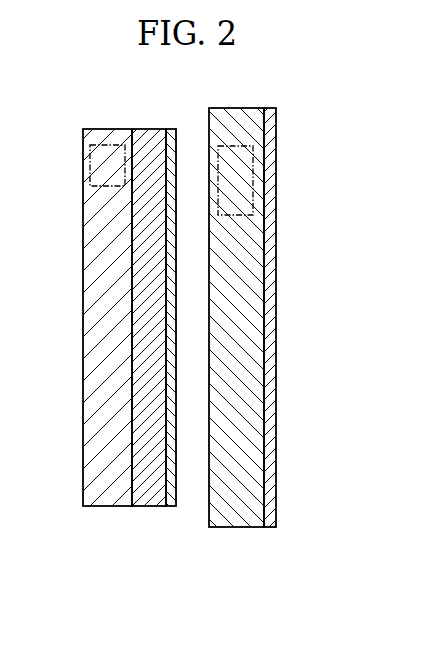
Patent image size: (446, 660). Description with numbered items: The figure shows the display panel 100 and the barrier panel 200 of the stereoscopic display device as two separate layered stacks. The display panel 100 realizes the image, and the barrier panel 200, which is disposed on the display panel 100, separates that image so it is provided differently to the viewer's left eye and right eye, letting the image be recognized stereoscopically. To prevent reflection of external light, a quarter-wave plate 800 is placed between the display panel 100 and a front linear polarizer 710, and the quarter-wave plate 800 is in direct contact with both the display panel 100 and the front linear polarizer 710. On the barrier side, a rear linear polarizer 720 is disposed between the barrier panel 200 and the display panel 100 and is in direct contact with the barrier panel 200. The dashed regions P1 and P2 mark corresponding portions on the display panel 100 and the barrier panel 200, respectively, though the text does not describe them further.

The display panel 100 is at (107, 494).
The quarter-wave plate 800 is at (150, 494).
The front linear polarizer 710 is at (168, 495).
The barrier panel 200 is at (240, 512).
The rear linear polarizer 720 is at (270, 520).
The first region P1 is at (105, 145).
The second region P2 is at (235, 146).